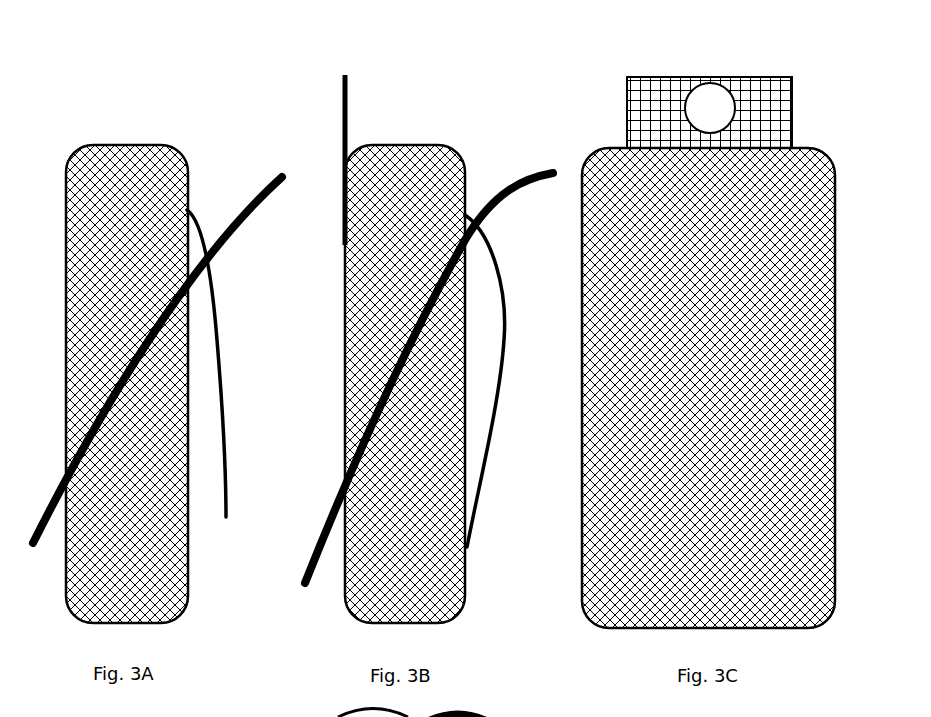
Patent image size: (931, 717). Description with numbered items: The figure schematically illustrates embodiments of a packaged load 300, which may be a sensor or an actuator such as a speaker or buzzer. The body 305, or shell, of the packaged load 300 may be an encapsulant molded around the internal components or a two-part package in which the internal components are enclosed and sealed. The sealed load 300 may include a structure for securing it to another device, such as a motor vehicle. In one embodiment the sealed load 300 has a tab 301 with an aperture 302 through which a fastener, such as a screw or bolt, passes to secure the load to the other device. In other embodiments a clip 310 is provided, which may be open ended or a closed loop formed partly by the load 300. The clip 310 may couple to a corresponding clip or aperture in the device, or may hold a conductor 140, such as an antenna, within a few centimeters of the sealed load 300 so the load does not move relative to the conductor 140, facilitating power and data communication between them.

In FIG. 3A, the conductor 140 is at (63, 483).
In FIG. 3B, the conductor 140 is at (310, 560).
In FIG. 3A, the packaged load 300 is at (98, 143).
In FIG. 3B, the packaged load 300 is at (398, 143).
In FIG. 3C, the packaged load 300 is at (597, 185).
In FIG. 3B, the tab 301 is at (353, 92).
In FIG. 3C, the tab 301 is at (670, 100).
In FIG. 3C, the aperture 302 is at (717, 107).
In FIG. 3A, the body 305 is at (153, 185).
In FIG. 3A, the clip 310 is at (232, 443).
In FIG. 3B, the clip 310 is at (507, 445).